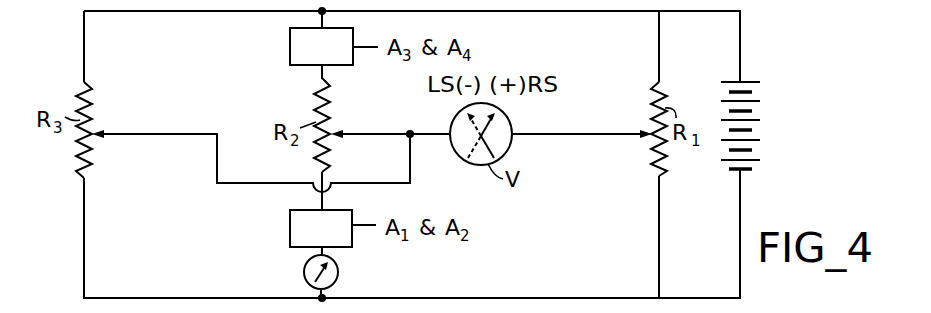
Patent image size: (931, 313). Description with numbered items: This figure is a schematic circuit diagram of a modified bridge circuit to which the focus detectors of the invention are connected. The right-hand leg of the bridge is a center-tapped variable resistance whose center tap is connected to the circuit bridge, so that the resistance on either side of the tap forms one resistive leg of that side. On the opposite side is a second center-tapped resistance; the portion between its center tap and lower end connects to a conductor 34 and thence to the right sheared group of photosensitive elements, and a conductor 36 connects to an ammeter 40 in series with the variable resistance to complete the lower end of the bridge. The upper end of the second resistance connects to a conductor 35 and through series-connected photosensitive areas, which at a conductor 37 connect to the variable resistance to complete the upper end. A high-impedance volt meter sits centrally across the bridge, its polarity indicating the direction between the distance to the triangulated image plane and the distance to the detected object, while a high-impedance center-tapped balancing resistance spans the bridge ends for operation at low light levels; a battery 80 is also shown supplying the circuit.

The conductor 34 is at (318, 197).
The conductor 35 is at (312, 75).
The conductor 36 is at (318, 248).
The conductor 37 is at (320, 19).
The ammeter 40 is at (338, 273).
The battery 80 is at (770, 96).